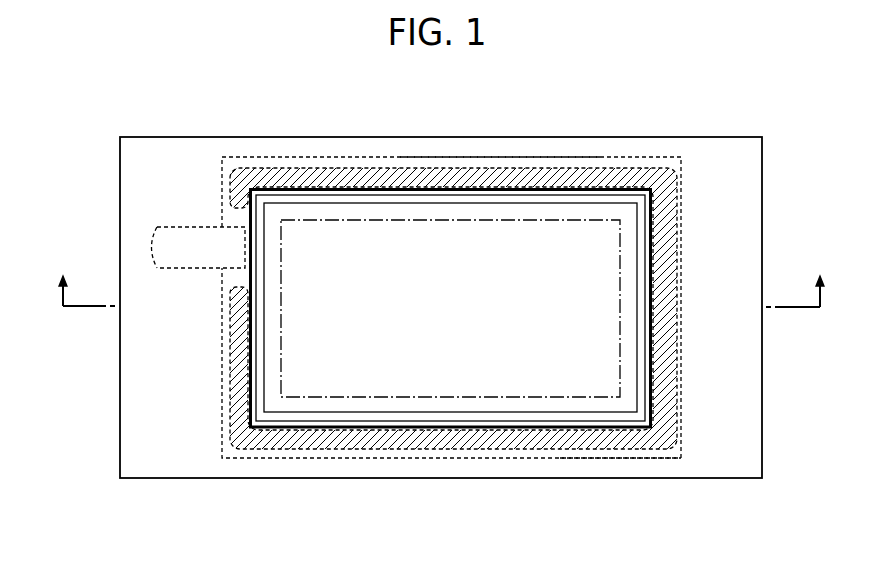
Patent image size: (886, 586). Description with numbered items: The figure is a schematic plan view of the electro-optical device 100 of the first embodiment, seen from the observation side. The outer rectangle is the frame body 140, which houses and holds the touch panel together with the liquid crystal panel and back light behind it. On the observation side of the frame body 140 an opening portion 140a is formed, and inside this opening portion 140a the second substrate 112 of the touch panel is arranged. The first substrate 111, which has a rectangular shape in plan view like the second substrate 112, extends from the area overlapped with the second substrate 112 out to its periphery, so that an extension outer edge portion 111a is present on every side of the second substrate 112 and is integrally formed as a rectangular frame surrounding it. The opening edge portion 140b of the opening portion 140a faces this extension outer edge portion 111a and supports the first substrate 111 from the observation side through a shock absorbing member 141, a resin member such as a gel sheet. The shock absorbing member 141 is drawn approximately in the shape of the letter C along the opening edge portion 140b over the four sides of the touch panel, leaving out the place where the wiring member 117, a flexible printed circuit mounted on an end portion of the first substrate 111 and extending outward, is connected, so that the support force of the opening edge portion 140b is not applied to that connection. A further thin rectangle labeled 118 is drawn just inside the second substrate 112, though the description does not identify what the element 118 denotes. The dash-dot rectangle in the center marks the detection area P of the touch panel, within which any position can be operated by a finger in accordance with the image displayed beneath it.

The electro-optical device 100 is at (273, 61).
The frame body 140 is at (173, 478).
The first substrate 111 is at (365, 157).
The extension outer edge portion 111a is at (623, 458).
The shock absorbing member 141 is at (490, 160).
The wiring member 117 is at (150, 252).
The opening portion 140a is at (571, 186).
The opening edge portion 140b is at (618, 176).
The second substrate 112 is at (325, 421).
The pixel defining layer 118 is at (450, 412).
The detection area P is at (565, 397).